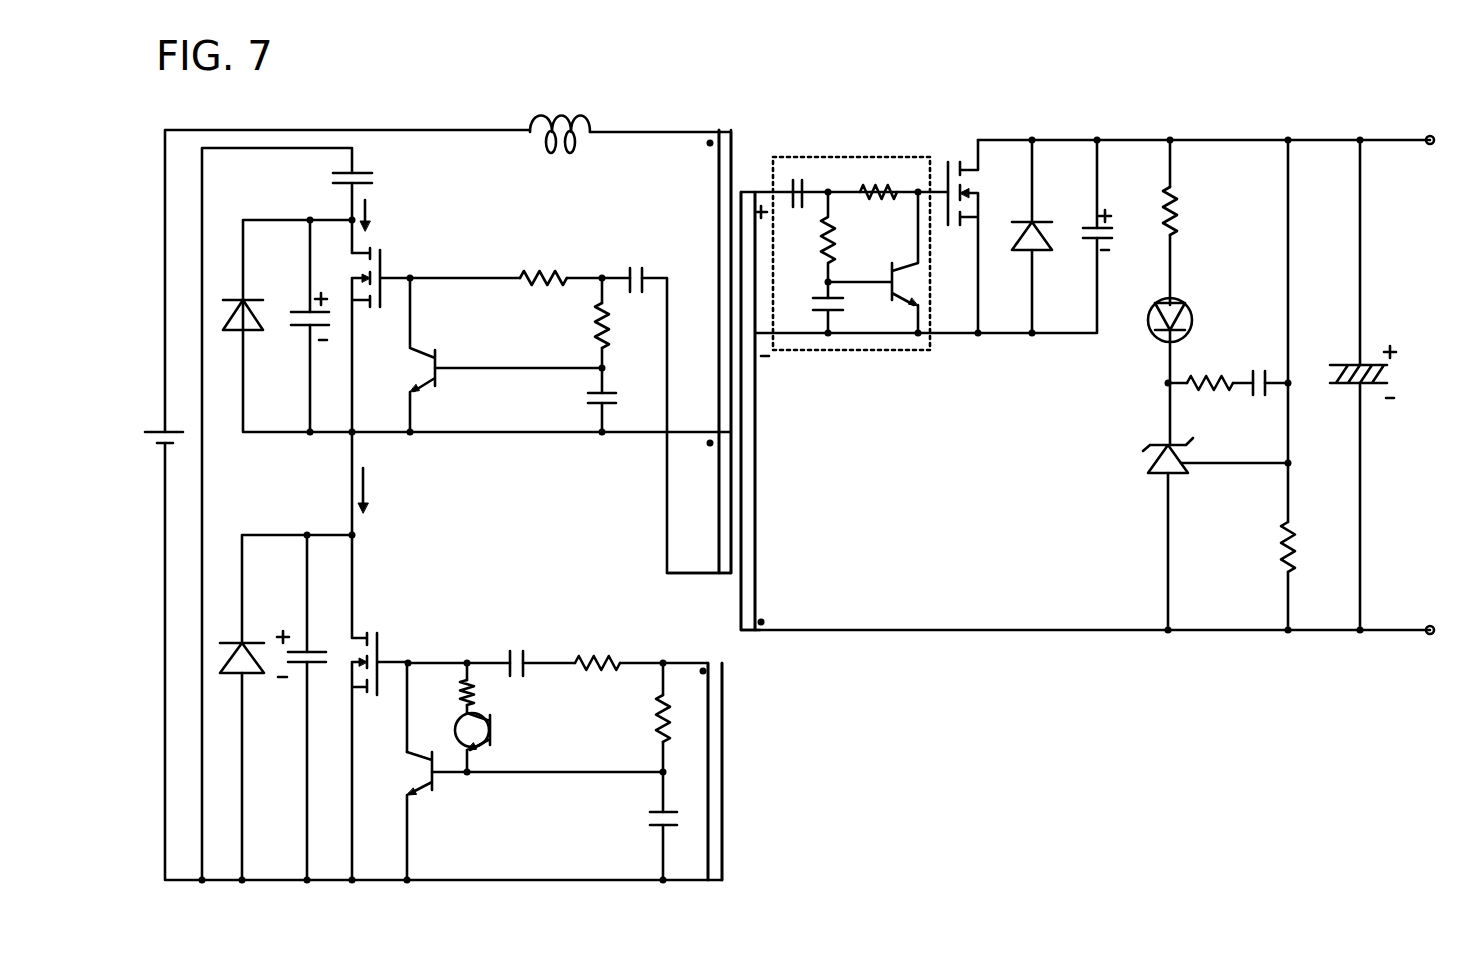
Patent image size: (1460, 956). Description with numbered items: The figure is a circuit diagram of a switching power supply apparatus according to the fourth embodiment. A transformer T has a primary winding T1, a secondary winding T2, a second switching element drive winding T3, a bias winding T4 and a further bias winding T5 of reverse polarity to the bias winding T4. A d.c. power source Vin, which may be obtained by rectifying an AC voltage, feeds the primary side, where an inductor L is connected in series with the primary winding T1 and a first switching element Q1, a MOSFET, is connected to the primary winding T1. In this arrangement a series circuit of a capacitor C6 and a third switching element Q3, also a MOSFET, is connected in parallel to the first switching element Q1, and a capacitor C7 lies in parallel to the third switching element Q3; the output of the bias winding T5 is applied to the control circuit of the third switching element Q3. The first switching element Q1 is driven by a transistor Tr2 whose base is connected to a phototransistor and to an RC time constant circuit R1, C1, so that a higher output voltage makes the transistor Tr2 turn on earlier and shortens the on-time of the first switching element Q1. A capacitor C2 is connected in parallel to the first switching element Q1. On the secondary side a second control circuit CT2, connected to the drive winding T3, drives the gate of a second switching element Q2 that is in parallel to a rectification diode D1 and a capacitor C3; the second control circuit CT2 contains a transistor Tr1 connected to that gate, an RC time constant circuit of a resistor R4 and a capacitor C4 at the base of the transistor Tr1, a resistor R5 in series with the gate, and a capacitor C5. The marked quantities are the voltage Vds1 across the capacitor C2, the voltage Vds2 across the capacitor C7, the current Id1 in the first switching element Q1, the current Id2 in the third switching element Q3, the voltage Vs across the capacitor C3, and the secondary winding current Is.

The d.c. power source Vin is at (149, 424).
The inductor L is at (560, 120).
The capacitor C6 is at (335, 183).
The current flowing in the third switching element Id2 is at (387, 215).
The third switching element Q3 is at (389, 335).
The voltage across capacitor C7 Vds2 is at (283, 357).
The capacitor C7 is at (317, 331).
The transformer T is at (733, 494).
The primary winding T1 is at (709, 351).
The bias winding T5 is at (699, 558).
The second switching element drive winding T3 is at (754, 397).
The secondary winding T2 is at (770, 535).
The bias winding T4 is at (709, 759).
The second control circuit CT2 is at (851, 228).
The capacitor C5 is at (802, 183).
The resistor R5 is at (878, 179).
The resistor R4 is at (806, 245).
The capacitor C4 is at (810, 315).
The transistor Tr1 is at (873, 262).
The second switching element Q2 is at (969, 223).
The rectification diode D1 is at (1041, 223).
The capacitor C3 is at (1087, 240).
The voltage across capacitor C3 Vs is at (1108, 195).
The secondary winding current Is is at (836, 617).
The current flowing in the first switching element Id1 is at (385, 490).
The voltage across capacitor C2 Vds1 is at (275, 690).
The capacitor C2 is at (311, 649).
The first switching element Q1 is at (380, 707).
The transistor Tr2 is at (434, 789).
The resistor R1 is at (643, 718).
The capacitor C1 is at (647, 823).